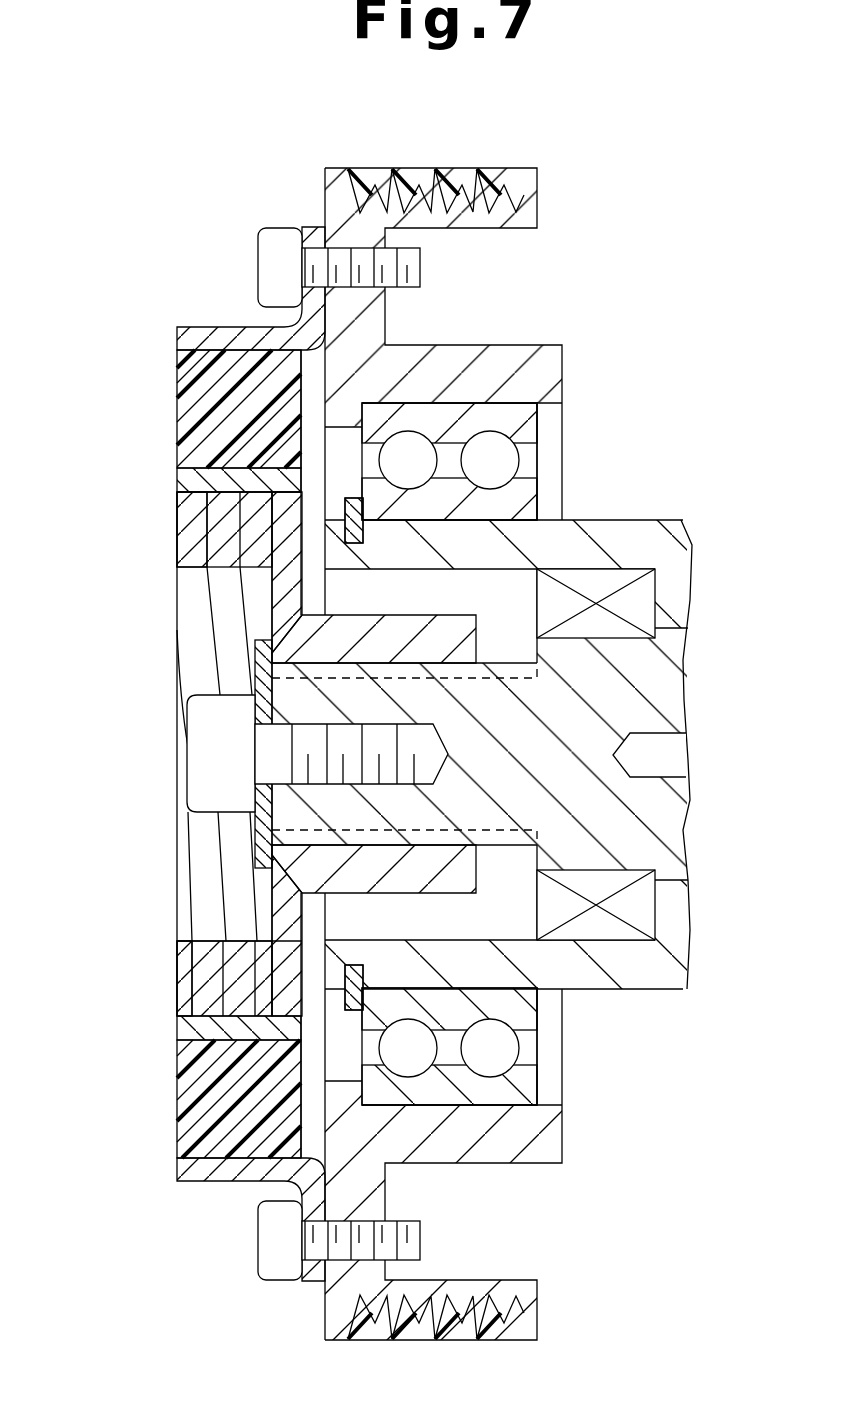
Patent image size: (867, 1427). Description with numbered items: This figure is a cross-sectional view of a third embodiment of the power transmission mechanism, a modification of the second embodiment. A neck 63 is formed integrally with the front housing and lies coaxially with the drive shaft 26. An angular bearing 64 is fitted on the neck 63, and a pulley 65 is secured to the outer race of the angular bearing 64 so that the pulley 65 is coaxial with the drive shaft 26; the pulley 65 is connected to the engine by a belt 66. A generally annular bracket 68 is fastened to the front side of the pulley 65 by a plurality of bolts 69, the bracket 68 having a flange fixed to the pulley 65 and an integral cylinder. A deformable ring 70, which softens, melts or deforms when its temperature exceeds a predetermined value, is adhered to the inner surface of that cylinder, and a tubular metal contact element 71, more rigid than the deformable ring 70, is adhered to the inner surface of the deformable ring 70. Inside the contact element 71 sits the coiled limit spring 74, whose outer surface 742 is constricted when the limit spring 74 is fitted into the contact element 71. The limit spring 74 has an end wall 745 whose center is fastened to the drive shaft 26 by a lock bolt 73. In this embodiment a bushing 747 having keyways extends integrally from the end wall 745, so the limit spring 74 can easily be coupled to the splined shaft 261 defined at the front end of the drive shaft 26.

The drive shaft 26 is at (503, 727).
The neck 63 is at (622, 533).
The angular bearing 64 is at (512, 462).
The pulley 65 is at (323, 184).
The belt 66 is at (455, 168).
The bracket 68 is at (282, 332).
The bolts 69 is at (258, 253).
The deformable ring 70 is at (185, 378).
The contact element 71 is at (177, 485).
The lock bolt 73 is at (220, 764).
The limit spring 74 is at (185, 550).
The outer surface 742 is at (176, 500).
The end wall 745 is at (290, 596).
The bushing 747 is at (358, 618).
The splined shaft 261 is at (318, 868).